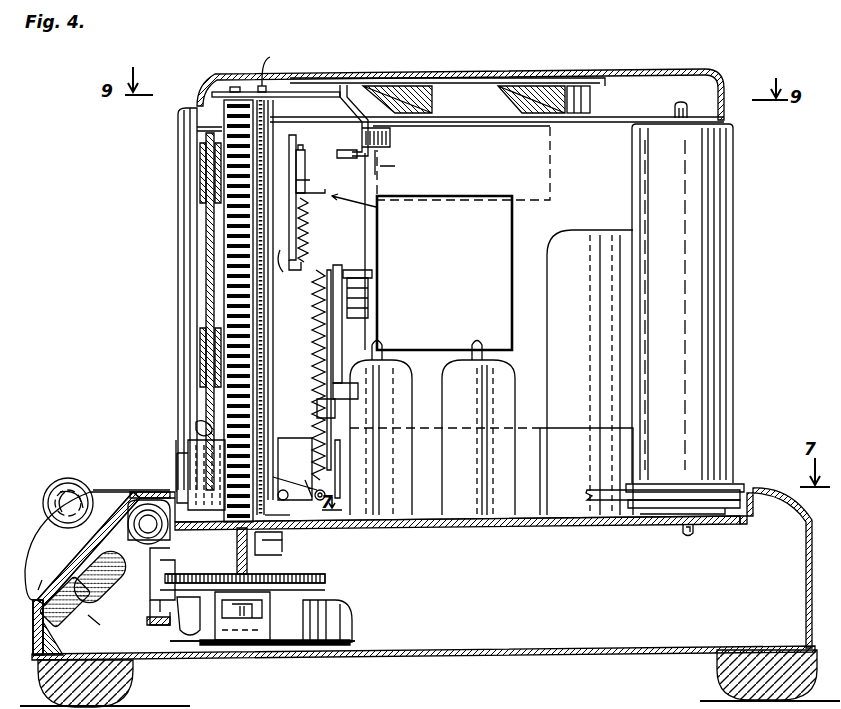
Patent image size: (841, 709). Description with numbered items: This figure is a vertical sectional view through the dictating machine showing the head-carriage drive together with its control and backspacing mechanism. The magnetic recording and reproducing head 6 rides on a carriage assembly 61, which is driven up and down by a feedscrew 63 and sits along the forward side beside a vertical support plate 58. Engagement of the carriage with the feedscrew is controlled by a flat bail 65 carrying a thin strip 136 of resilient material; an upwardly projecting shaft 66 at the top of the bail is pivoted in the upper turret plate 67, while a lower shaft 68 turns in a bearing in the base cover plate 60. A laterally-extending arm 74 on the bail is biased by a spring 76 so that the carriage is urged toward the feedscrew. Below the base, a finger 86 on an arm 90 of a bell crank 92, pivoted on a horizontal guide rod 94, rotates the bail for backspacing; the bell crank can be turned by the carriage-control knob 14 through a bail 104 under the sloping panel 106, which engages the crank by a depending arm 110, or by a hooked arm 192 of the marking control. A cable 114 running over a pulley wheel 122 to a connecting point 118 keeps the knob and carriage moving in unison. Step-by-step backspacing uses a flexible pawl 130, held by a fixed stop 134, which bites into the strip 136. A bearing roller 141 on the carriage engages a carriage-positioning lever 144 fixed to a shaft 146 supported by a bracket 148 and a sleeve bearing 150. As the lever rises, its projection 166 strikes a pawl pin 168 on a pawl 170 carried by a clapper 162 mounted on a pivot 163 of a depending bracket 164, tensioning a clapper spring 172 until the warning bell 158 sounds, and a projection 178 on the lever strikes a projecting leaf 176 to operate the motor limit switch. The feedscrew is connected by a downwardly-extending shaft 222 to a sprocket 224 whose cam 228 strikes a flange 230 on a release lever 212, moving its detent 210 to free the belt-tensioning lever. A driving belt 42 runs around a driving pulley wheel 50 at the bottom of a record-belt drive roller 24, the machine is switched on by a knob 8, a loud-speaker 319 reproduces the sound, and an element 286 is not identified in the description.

The recording and reproducing head 6 is at (187, 455).
The knob 8 is at (68, 638).
The carriage-control knob 14 is at (58, 480).
The record-belt drive roller 24 is at (703, 223).
The driving belt 42 is at (602, 492).
The driving pulley wheel 50 is at (680, 488).
The vertical support plate 58 is at (183, 246).
The cover plate 60 is at (572, 525).
The carriage assembly 61 is at (176, 452).
The feedscrew 63 is at (228, 283).
The bail 65 is at (255, 305).
The upwardly projecting shaft 66 is at (254, 67).
The upper turret plate 67 is at (612, 119).
The shaft 68 is at (275, 514).
The laterally-extending arm 74 is at (345, 97).
The spring 76 is at (391, 138).
The finger 86 is at (285, 546).
The arm 90 is at (285, 552).
The bell crank 92 is at (149, 574).
The horizontal guide rod 94 is at (150, 505).
The bail 104 is at (85, 612).
The sloping panel 106 is at (135, 490).
The depending arm 110 is at (117, 470).
The cable 114 is at (210, 218).
The connecting point 118 is at (200, 430).
The pulley wheel 122 is at (210, 155).
The flexible pawl 130 is at (295, 468).
The fixed stop 134 is at (299, 476).
The thin strip of resilient material 136 is at (273, 433).
The bearing roller 141 is at (341, 485).
The carriage-positioning lever 144 is at (325, 348).
The shaft 146 is at (368, 295).
The bracket 148 is at (342, 323).
The sleeve bearing 150 is at (372, 273).
The warning bell 158 is at (372, 208).
The clapper 162 is at (296, 140).
The pivot 163 is at (305, 155).
The depending bracket 164 is at (327, 300).
The projection 166 is at (335, 410).
The pawl pin 168 is at (326, 193).
The pawl 170 is at (309, 208).
The clapper spring 172 is at (309, 240).
The projecting leaf 176 is at (395, 166).
The projection 178 is at (358, 382).
The hooked arm 192 is at (190, 640).
The detent 210 is at (150, 640).
The release lever 212 is at (290, 645).
The downwardly-extending shaft 222 is at (242, 555).
The sprocket 224 is at (316, 577).
The cam 228 is at (263, 613).
The flange 230 is at (350, 612).
The latch cylinder 286 is at (100, 552).
The loud-speaker 319 is at (520, 95).